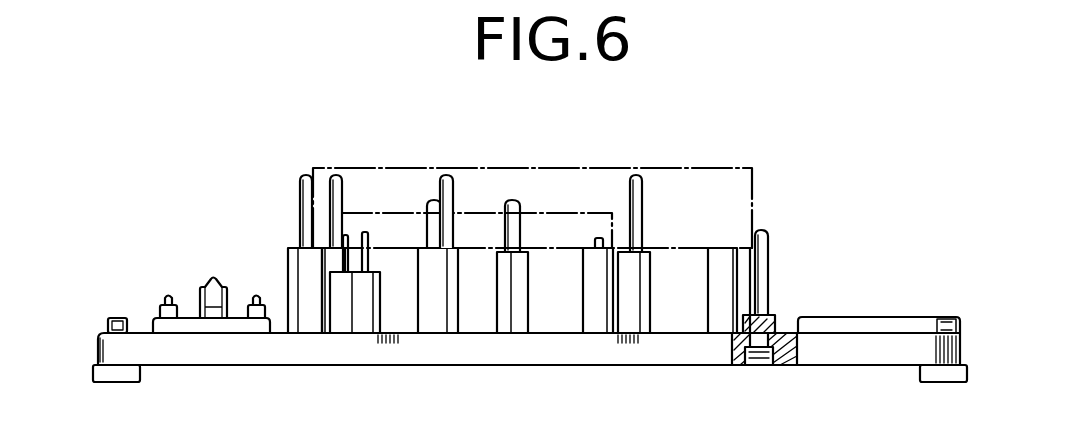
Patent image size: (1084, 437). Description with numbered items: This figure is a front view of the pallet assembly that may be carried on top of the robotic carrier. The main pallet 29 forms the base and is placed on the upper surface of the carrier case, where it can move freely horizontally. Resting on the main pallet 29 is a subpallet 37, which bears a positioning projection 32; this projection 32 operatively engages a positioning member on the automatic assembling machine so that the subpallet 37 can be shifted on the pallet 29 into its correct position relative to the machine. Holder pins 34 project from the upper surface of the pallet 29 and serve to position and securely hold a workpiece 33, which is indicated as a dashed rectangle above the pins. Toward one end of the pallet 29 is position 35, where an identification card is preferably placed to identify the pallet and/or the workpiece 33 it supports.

The main pallet 29 is at (850, 240).
The positioning projection 32 is at (213, 278).
The workpiece 33 is at (578, 222).
The holder pins 34 is at (308, 262).
The ID card position 35 is at (901, 318).
The subpallet 37 is at (185, 326).